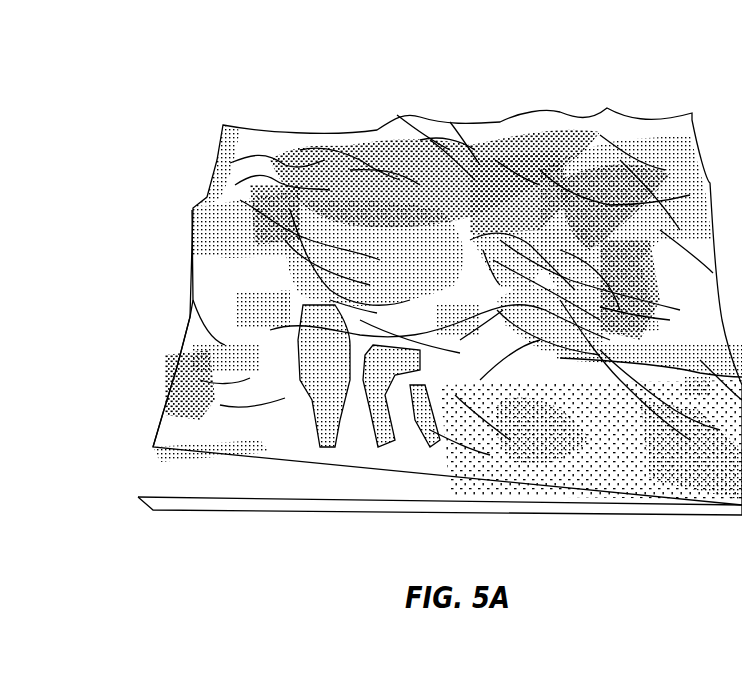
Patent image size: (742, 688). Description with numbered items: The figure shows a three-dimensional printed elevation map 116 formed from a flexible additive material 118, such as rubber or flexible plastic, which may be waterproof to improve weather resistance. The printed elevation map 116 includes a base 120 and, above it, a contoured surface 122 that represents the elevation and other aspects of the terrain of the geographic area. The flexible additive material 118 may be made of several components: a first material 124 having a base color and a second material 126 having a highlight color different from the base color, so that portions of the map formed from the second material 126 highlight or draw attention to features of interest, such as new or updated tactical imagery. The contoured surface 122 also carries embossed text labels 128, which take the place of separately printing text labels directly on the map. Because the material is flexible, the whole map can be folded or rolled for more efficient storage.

The 3D printed elevation map 116 is at (256, 85).
The flexible additive material 118 is at (140, 499).
The base 120 is at (185, 513).
The contoured surface 122 is at (205, 291).
The first material 124 is at (452, 140).
The second material 126 is at (507, 167).
The embossed text labels 128 is at (320, 498).